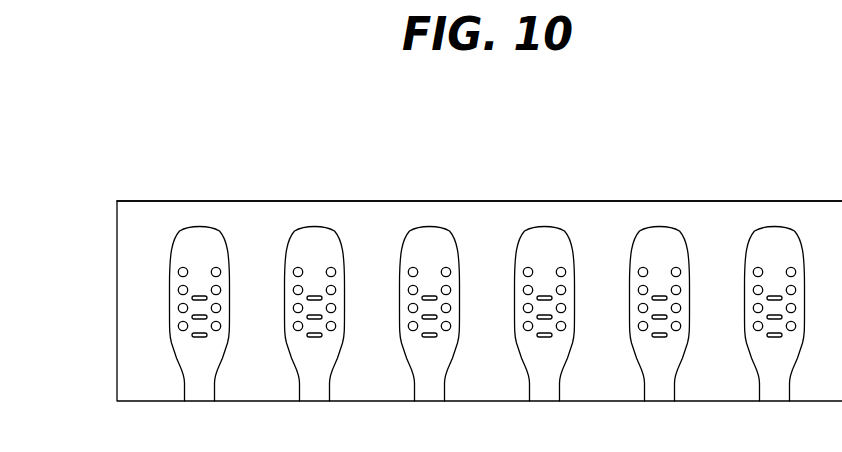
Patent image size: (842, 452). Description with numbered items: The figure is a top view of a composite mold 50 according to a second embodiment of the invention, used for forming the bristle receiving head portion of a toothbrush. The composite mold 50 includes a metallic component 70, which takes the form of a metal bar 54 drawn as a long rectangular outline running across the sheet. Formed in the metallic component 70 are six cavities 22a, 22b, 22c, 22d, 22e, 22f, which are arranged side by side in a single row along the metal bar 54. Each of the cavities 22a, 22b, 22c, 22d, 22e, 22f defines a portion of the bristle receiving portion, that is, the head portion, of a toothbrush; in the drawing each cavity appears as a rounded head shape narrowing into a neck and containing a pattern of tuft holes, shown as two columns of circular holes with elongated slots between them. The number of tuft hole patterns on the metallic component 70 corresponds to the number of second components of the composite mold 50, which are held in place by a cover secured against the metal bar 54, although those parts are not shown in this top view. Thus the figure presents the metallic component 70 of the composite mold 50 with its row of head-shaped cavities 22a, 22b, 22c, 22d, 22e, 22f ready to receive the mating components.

The composite mold 50 is at (435, 244).
The metal bar 54 is at (133, 310).
The metallic component 70 is at (184, 208).
The cavity 22a is at (202, 235).
The cavity 22b is at (317, 235).
The cavity 22c is at (432, 235).
The cavity 22d is at (547, 235).
The cavity 22e is at (662, 235).
The cavity 22f is at (777, 235).